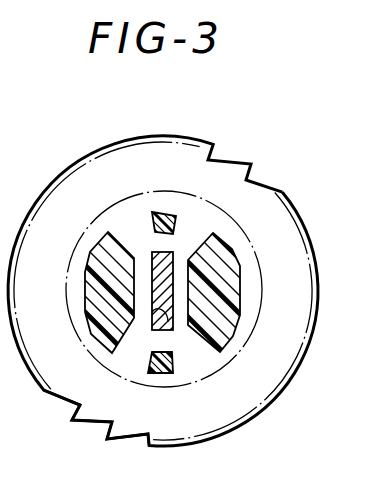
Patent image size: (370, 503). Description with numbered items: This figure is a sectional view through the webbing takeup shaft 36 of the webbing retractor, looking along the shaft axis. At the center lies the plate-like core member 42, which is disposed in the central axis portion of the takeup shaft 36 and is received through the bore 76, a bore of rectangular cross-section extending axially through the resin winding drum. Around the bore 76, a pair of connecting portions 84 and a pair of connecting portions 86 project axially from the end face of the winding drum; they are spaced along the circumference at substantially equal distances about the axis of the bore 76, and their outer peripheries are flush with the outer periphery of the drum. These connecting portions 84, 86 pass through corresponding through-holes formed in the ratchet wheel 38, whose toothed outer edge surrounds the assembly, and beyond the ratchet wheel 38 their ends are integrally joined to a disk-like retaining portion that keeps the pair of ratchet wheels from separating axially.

The webbing takeup shaft 36 is at (253, 283).
The ratchet wheel 38 is at (129, 438).
The plate-like core member 42 is at (174, 251).
The bore 76 is at (156, 330).
The connecting portions 84 is at (94, 299).
The connecting portions 86 is at (163, 211).